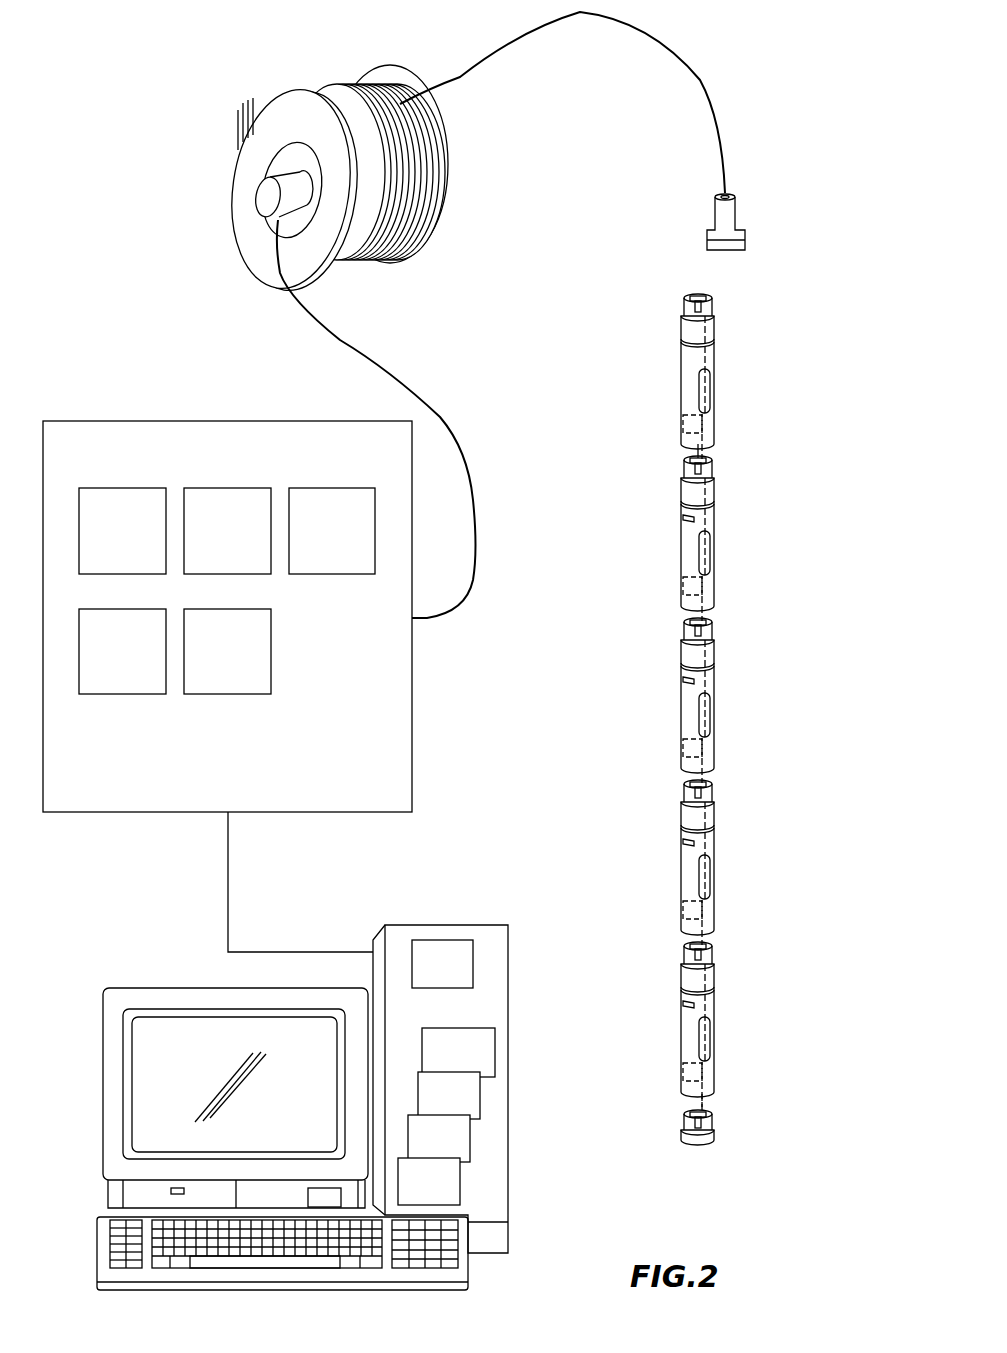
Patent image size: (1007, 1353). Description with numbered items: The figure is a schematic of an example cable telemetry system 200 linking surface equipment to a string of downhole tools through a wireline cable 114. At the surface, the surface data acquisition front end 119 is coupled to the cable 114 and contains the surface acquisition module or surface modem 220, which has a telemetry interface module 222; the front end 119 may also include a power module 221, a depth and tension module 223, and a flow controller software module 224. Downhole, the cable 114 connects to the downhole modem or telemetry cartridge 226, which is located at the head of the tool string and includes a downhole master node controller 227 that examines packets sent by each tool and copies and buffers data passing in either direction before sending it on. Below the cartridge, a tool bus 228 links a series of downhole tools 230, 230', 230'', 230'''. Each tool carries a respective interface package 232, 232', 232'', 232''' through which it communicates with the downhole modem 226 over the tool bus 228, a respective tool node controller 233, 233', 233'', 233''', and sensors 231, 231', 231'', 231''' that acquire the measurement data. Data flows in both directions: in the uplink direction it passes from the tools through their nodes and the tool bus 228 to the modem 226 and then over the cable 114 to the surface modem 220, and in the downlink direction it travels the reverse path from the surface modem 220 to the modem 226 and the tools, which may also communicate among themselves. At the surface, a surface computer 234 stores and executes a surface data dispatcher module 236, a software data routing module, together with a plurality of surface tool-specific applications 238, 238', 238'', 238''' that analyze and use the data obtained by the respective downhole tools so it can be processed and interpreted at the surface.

The cable telemetry system 200 is at (137, 198).
The wireline cable 114 is at (700, 76).
The surface data acquisition front end 119 is at (205, 462).
The surface acquisition module/surface modem (DTM) 220 is at (104, 544).
The power module 221 is at (209, 544).
The telemetry interface module (TIM) 222 is at (314, 544).
The depth and tension module 223 is at (104, 664).
The flow controller software module (FEPC) 224 is at (209, 664).
The downhole modem (DTC) 226 is at (716, 353).
The downhole master node controller 227 is at (703, 421).
The tool bus 228 is at (704, 454).
The downhole tool 230 is at (714, 538).
The sensor 231 is at (654, 526).
The interface package 232 is at (758, 548).
The tool node controller 233 is at (750, 569).
The downhole tool 230' is at (711, 700).
The sensor 231' is at (648, 688).
The interface package 232' is at (761, 710).
The tool node controller 233' is at (753, 752).
The downhole tool 230'' is at (712, 862).
The sensor 231'' is at (645, 850).
The interface package 232'' is at (764, 872).
The tool node controller 233'' is at (756, 914).
The downhole tool 230''' is at (710, 1024).
The sensor 231''' is at (640, 1012).
The interface package 232''' is at (767, 1033).
The tool node controller 233''' is at (759, 1076).
The surface computer 234 is at (186, 1054).
The surface data dispatcher module 236 is at (426, 976).
The surface tool-specific application 238 is at (429, 1181).
The surface tool-specific application 238' is at (439, 1138).
The surface tool-specific application 238'' is at (449, 1095).
The surface tool-specific application 238''' is at (458, 1052).